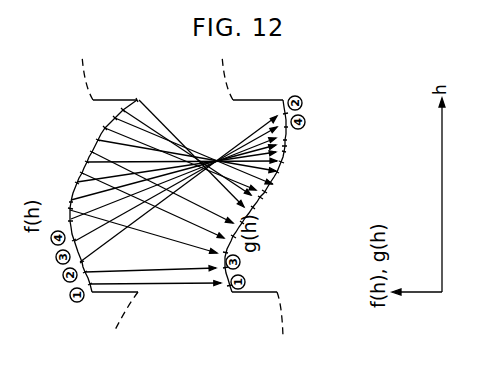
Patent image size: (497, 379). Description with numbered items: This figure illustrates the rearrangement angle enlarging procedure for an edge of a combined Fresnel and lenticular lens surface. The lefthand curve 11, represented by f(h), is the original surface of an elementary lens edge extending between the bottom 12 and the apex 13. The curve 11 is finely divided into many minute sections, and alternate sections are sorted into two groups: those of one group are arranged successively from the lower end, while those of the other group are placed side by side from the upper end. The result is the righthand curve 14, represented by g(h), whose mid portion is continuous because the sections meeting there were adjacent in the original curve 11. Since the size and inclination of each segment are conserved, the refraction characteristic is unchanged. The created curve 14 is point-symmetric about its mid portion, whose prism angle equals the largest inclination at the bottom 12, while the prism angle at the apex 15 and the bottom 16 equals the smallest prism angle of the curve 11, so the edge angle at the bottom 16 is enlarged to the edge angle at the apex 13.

The lefthand curve 11 is at (97, 132).
The bottom 12 is at (137, 100).
The apex 13 is at (89, 284).
The righthand curve 14 is at (282, 166).
The apex 15 is at (232, 292).
The bottom 16 is at (283, 100).